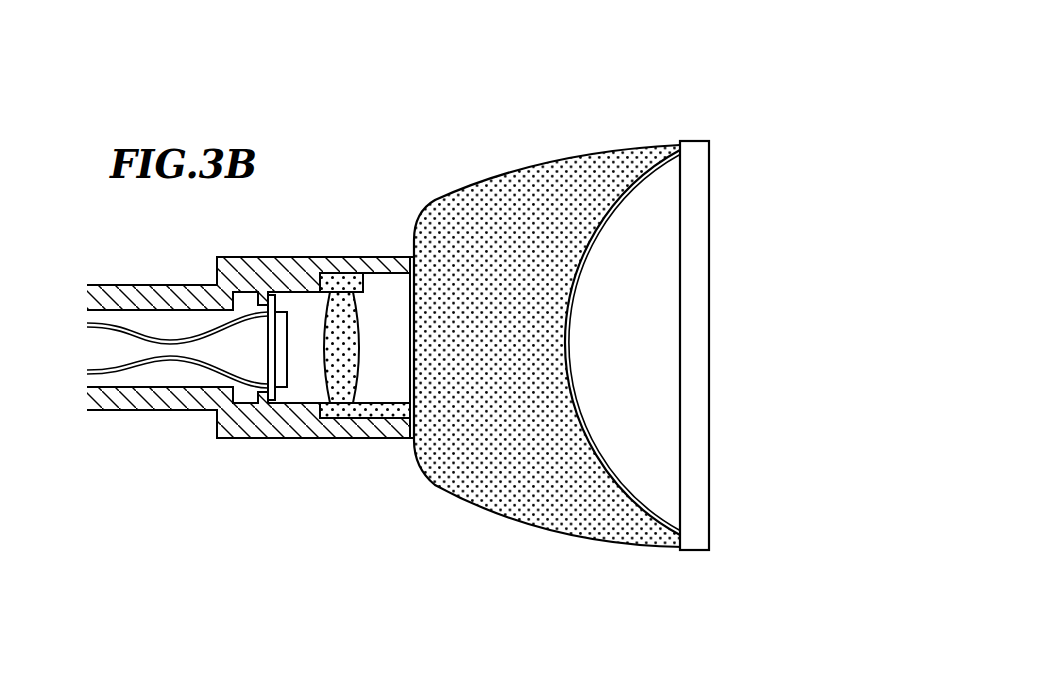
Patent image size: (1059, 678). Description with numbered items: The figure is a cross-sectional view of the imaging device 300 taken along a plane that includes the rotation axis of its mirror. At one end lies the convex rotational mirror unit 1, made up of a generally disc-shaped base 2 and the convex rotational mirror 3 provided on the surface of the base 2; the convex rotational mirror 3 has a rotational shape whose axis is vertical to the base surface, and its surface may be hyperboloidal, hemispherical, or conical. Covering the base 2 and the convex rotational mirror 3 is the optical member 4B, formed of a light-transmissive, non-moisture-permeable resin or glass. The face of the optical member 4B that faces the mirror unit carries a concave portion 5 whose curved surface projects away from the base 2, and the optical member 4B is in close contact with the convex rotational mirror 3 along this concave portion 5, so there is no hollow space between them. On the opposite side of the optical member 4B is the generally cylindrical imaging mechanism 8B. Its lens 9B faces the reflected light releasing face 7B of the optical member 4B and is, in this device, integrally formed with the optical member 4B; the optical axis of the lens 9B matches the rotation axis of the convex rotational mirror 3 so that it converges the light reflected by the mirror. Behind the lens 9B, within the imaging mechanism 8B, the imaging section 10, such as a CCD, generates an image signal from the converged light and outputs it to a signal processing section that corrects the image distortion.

The imaging device 300 is at (676, 113).
The imaging mechanism 8B is at (327, 475).
The imaging section 10 is at (262, 352).
The lens 9B is at (340, 360).
The reflected light releasing face 7B is at (410, 295).
The optical member 4B is at (513, 569).
The concave portion 5 is at (577, 267).
The convex rotational mirror unit 1 is at (710, 606).
The convex rotational mirror 3 is at (647, 455).
The base 2 is at (697, 550).